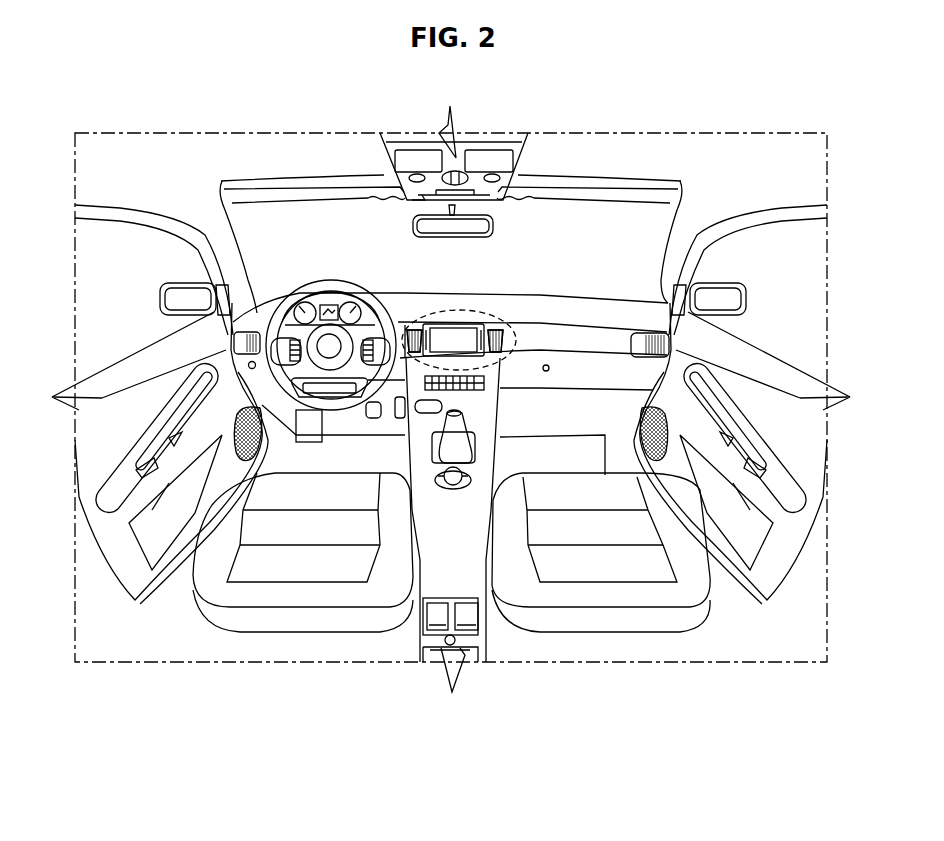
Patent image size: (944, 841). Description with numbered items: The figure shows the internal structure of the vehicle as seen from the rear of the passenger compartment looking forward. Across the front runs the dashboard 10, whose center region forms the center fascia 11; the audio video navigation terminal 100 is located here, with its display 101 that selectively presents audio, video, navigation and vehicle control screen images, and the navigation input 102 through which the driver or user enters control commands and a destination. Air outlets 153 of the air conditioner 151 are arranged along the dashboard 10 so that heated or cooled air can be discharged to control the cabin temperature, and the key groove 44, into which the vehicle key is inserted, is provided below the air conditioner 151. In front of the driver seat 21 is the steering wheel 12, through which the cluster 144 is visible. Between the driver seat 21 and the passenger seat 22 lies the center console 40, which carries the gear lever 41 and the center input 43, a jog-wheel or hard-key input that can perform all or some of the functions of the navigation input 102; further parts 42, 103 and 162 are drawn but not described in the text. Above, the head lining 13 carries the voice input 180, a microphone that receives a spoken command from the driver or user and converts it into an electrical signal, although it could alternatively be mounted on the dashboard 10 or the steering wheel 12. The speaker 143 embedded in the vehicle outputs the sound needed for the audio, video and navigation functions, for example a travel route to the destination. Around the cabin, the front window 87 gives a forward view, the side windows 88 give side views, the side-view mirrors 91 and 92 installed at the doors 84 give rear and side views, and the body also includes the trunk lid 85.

The dashboard 10 is at (586, 305).
The center fascia 11 is at (452, 322).
The steering wheel 12 is at (331, 321).
The head lining 13 is at (291, 146).
The driver seat 21 is at (310, 596).
The passenger seat 22 is at (625, 593).
The center console 40 is at (482, 418).
The gear lever 41 is at (436, 437).
The console box 42 is at (476, 562).
The center input 43 is at (484, 462).
The key groove 44 is at (442, 404).
The door 84 is at (97, 450).
The trunk lid 85 is at (807, 444).
The front window 87 is at (805, 283).
The side window 88 is at (100, 292).
The side-view mirror 91 is at (172, 291).
The side-view mirror 92 is at (725, 290).
The audio video navigation (AVN) terminal 100 is at (464, 314).
The display 101 is at (440, 333).
The navigation input 102 is at (486, 331).
The control button 103 is at (249, 367).
The speaker 143 is at (192, 548).
The cluster 144 is at (330, 304).
The air conditioner 151 is at (486, 383).
The air outlet 153 is at (410, 338).
The steering column 162 is at (357, 360).
The voice input 180 is at (420, 198).